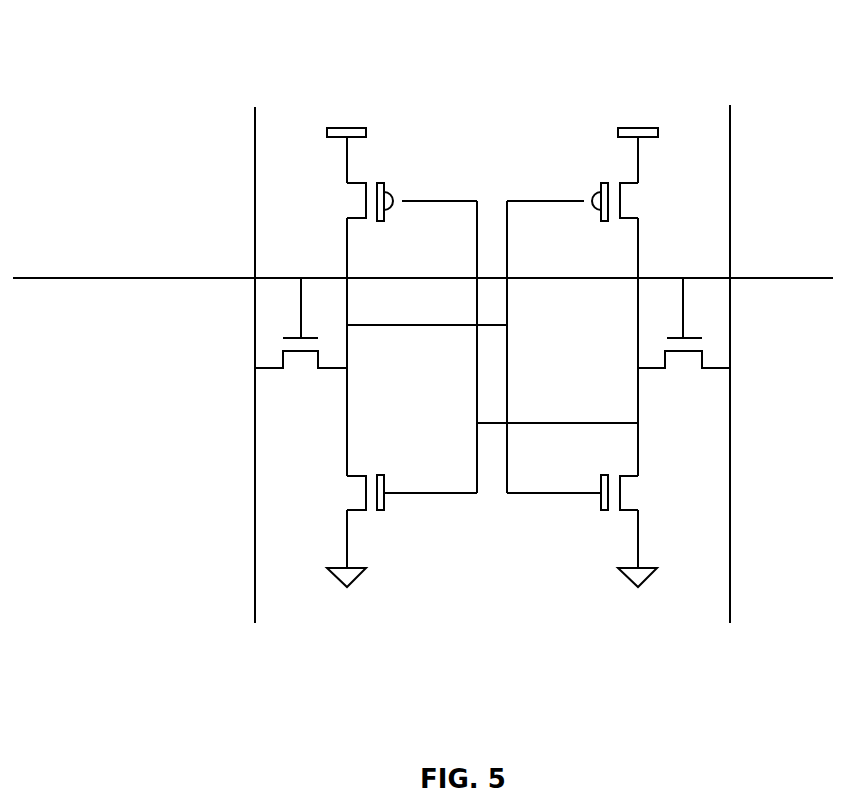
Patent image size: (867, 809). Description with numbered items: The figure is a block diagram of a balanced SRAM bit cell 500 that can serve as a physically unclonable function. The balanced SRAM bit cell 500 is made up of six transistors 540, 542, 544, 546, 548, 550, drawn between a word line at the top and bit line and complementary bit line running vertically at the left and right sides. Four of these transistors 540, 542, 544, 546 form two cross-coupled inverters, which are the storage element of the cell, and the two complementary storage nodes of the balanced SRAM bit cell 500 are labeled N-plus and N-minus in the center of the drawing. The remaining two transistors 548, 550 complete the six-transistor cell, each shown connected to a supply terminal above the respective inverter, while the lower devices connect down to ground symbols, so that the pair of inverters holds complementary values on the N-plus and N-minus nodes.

The balanced SRAM bit cell 500 is at (278, 45).
The transistor 540 is at (305, 372).
The transistor 542 is at (355, 492).
The transistor 544 is at (687, 373).
The transistor 546 is at (633, 493).
The transistor 548 is at (345, 204).
The transistor 550 is at (633, 203).